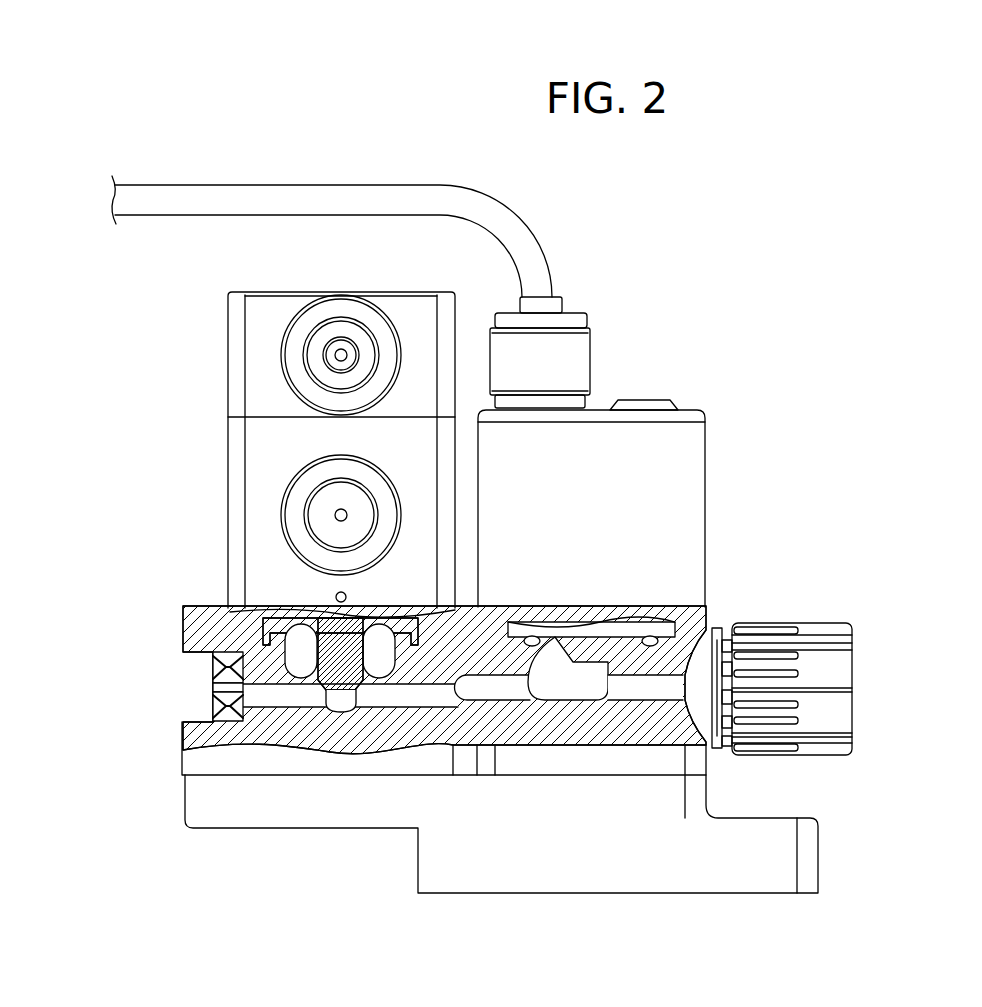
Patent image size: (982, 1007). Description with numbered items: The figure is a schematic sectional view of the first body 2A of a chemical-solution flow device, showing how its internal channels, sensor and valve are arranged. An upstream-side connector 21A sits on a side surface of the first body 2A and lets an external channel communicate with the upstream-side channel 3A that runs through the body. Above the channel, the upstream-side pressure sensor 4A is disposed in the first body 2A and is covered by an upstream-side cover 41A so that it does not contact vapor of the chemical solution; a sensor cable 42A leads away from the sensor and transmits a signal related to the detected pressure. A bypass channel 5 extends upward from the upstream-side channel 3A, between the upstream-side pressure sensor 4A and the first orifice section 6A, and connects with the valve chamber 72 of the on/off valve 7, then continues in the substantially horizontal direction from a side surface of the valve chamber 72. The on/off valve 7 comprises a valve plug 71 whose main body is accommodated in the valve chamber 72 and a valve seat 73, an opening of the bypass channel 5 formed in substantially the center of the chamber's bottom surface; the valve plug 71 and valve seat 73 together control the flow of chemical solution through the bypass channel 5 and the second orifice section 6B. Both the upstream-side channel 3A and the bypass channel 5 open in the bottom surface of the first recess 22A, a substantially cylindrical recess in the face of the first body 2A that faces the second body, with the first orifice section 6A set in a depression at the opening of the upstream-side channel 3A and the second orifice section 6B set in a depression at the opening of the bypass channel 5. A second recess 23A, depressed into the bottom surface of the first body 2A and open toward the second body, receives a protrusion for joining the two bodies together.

The first body 2A is at (781, 249).
The sensor cable 42A is at (290, 187).
The upstream-side pressure sensor 4A is at (714, 402).
The upstream-side cover 41A is at (706, 523).
The on/off valve 7 is at (215, 445).
The bypass channel 5 is at (253, 672).
The upstream-side channel 3A is at (565, 695).
The valve seat 73 is at (305, 672).
The valve plug 71 is at (340, 680).
The valve chamber 72 is at (378, 662).
The second orifice section 6B is at (217, 672).
The first recess 22A is at (217, 689).
The first orifice section 6A is at (215, 706).
The second recess 23A is at (362, 828).
The upstream-side connector 21A is at (853, 663).